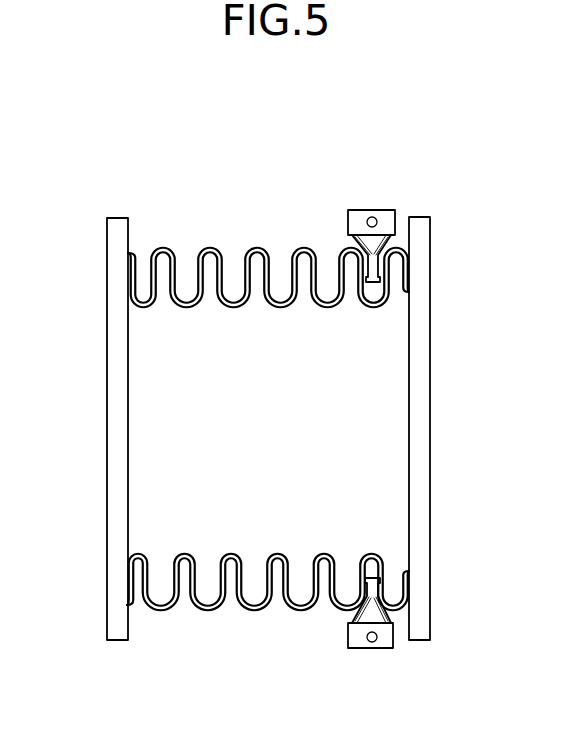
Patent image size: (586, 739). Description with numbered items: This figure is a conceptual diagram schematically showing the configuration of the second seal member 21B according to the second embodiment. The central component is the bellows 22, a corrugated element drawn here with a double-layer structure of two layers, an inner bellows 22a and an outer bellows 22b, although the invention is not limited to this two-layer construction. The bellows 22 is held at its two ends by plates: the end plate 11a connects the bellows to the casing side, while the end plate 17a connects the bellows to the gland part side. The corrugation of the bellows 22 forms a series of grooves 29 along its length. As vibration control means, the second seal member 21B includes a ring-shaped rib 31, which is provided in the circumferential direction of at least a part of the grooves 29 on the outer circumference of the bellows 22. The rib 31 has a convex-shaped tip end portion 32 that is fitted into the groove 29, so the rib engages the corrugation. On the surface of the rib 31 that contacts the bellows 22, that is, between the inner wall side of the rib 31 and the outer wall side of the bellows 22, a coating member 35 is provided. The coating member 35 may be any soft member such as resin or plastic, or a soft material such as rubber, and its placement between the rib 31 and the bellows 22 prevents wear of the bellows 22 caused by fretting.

The second seal member 21B is at (287, 166).
The end plate 11a is at (106, 528).
The end plate 17a is at (430, 540).
The bellows 22 is at (167, 147).
The inner bellows 22a is at (196, 262).
The outer bellows 22b is at (208, 256).
The grooves 29 is at (230, 262).
The ring-shaped rib 31 is at (365, 209).
The convex-shaped tip end portion 32 is at (381, 245).
The coating member 35 is at (393, 246).